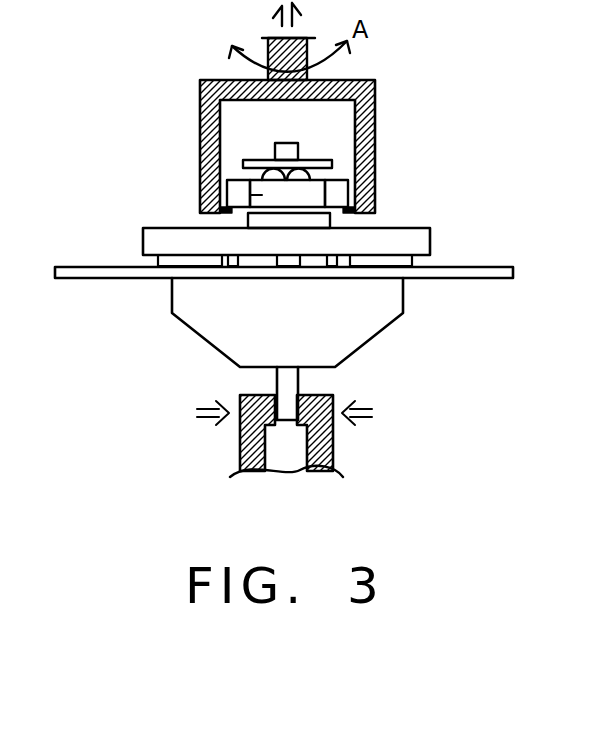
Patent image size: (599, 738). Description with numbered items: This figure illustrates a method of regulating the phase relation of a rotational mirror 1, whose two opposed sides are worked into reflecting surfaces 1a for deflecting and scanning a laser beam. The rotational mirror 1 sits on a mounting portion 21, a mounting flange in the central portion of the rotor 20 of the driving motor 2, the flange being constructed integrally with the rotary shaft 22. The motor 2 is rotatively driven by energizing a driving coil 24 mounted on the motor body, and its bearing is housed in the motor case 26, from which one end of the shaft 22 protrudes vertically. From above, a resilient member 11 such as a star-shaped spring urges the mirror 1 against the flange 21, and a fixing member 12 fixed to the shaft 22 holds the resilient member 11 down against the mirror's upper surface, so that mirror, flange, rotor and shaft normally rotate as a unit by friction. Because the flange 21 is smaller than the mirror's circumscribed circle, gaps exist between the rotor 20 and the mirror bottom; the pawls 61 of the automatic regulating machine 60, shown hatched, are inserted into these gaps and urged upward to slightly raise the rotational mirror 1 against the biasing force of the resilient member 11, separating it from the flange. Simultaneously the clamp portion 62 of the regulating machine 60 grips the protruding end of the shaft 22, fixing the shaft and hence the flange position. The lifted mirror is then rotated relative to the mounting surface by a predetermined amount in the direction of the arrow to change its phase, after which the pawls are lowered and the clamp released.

The rotational mirror 1 is at (325, 188).
The reflecting surfaces 1a is at (258, 195).
The driving motor 2 is at (490, 267).
The resilient member 11 is at (243, 164).
The fixing member 12 is at (252, 168).
The rotor 20 is at (148, 246).
The mounting portion 21 is at (307, 225).
The rotary shaft 22 is at (288, 402).
The driving coil 24 is at (180, 264).
The motor case 26 is at (205, 338).
The automatic regulating machine 60 is at (376, 95).
The pawls 61 is at (250, 214).
The clamp portion 62 is at (327, 398).